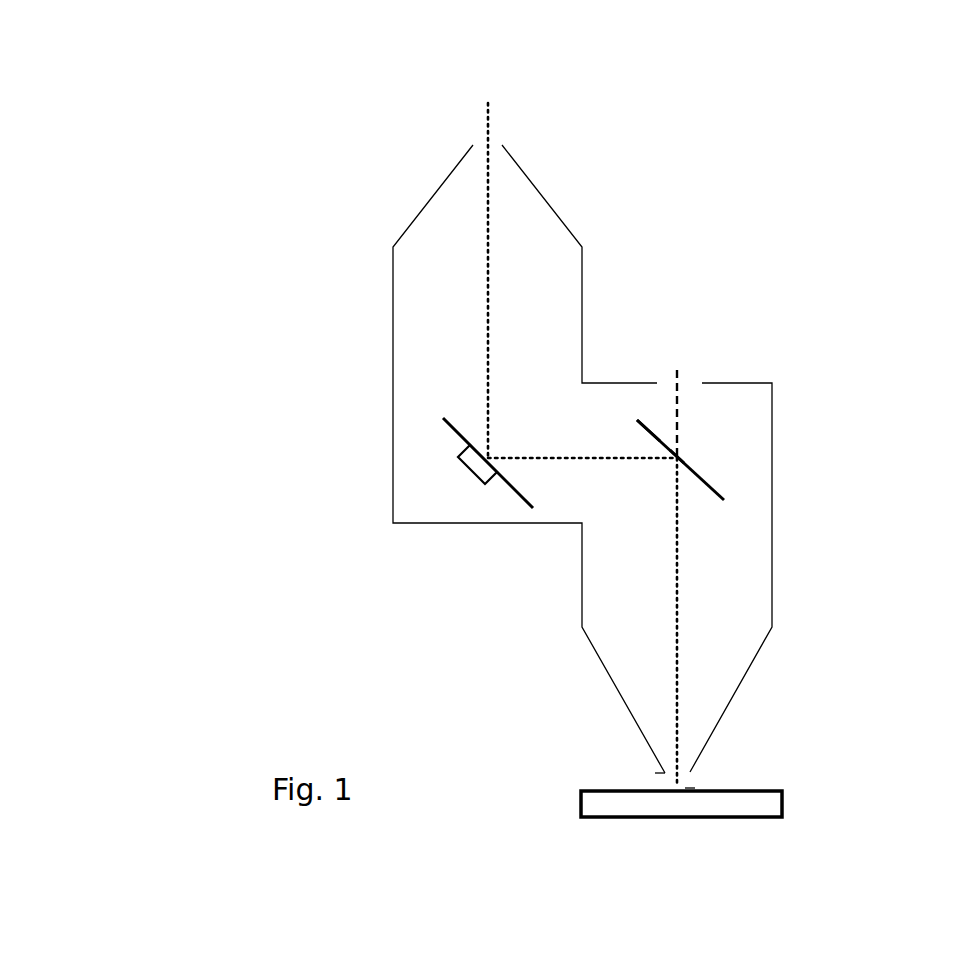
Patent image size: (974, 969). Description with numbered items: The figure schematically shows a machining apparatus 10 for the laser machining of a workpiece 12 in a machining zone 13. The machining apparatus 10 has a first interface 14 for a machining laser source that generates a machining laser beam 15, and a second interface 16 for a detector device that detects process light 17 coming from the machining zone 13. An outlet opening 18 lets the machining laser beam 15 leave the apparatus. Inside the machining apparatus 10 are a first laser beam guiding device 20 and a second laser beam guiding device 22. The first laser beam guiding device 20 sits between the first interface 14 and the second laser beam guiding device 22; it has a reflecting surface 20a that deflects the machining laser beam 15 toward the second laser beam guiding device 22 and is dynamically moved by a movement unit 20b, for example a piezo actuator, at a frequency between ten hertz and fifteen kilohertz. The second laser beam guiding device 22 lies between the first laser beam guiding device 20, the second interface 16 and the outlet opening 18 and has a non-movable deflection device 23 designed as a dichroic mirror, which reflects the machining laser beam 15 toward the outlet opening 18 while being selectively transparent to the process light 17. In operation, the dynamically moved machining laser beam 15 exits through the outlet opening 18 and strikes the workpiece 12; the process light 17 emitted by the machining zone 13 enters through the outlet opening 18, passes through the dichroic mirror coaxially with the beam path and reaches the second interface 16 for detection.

The machining apparatus 10 is at (252, 168).
The workpiece 12 is at (786, 797).
The machining zone 13 is at (709, 777).
The first interface 14 is at (509, 126).
The machining laser beam 15 is at (482, 127).
The second interface 16 is at (695, 348).
The process light 17 is at (677, 412).
The outlet opening 18 is at (642, 763).
The first laser beam guiding device 20 is at (412, 483).
The reflecting surface 20a is at (457, 413).
The movement unit 20b is at (483, 488).
The second laser beam guiding device 22 is at (738, 477).
The non-movable deflection device 23 is at (677, 447).